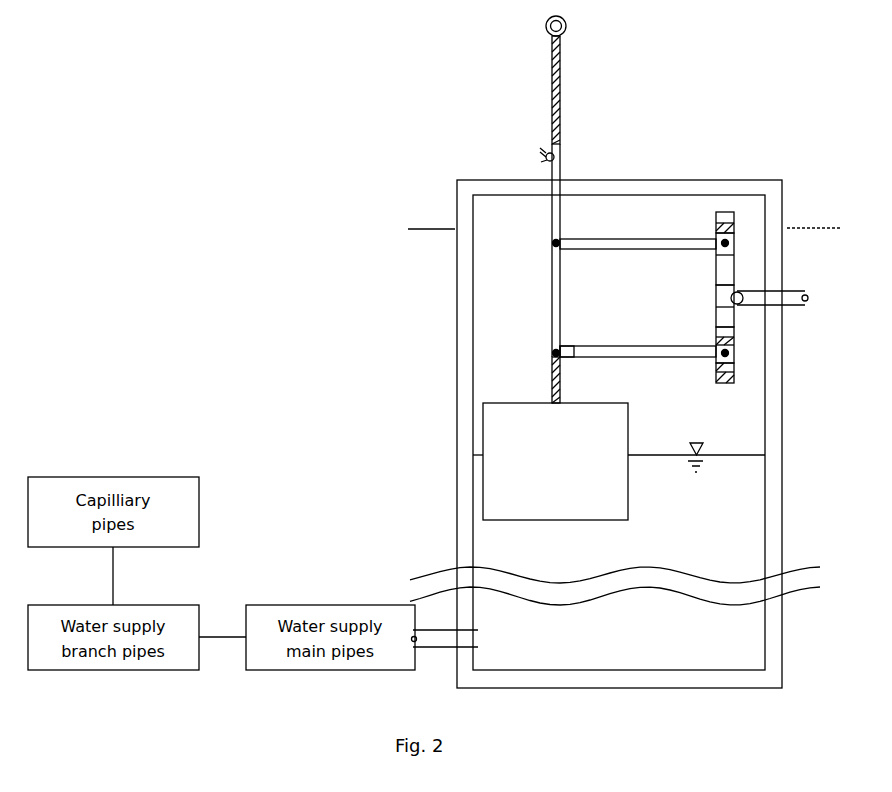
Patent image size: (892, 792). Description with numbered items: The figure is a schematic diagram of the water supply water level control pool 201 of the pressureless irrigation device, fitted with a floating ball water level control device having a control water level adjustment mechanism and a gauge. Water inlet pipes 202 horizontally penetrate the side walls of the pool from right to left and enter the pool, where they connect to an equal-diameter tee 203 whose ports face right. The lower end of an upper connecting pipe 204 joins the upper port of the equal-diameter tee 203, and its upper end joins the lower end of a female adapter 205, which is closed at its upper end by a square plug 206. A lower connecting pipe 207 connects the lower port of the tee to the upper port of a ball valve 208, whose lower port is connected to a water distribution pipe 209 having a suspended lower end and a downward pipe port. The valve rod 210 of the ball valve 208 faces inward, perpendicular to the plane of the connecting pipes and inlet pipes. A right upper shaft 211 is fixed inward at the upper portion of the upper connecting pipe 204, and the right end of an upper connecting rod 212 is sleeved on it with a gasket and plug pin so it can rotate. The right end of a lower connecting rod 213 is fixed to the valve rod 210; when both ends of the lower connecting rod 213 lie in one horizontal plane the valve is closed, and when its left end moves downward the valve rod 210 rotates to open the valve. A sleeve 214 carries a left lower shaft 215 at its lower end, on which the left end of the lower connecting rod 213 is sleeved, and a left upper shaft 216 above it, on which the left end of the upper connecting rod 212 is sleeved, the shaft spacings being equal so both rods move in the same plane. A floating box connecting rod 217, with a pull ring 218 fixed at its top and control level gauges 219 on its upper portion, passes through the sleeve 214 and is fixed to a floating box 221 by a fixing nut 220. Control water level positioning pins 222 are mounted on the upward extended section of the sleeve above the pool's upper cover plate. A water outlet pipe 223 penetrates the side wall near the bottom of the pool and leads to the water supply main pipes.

The water supply water level control pool 201 is at (775, 545).
The water inlet pipes 202 is at (762, 290).
The equal-diameter tee 203 is at (766, 235).
The upper connecting pipe 204 is at (741, 293).
The female adapter 205 is at (729, 258).
The square plug 206 is at (730, 212).
The lower connecting pipe 207 is at (738, 320).
The ball valve 208 is at (740, 362).
The water distribution pipe 209 is at (740, 385).
The valve rod 210 is at (715, 372).
The right upper shaft 211 is at (718, 256).
The upper connecting rod 212 is at (645, 238).
The lower connecting rod 213 is at (663, 346).
The sleeve 214 is at (555, 290).
The left lower shaft 215 is at (552, 358).
The left upper shaft 216 is at (552, 247).
The floating box connecting rod 217 is at (573, 350).
The pull ring 218 is at (568, 33).
The control level gauges 219 is at (557, 68).
The fixing nut 220 is at (562, 400).
The floating box 221 is at (610, 483).
The control water level positioning pins 222 is at (537, 153).
The water outlet pipe 223 is at (478, 637).